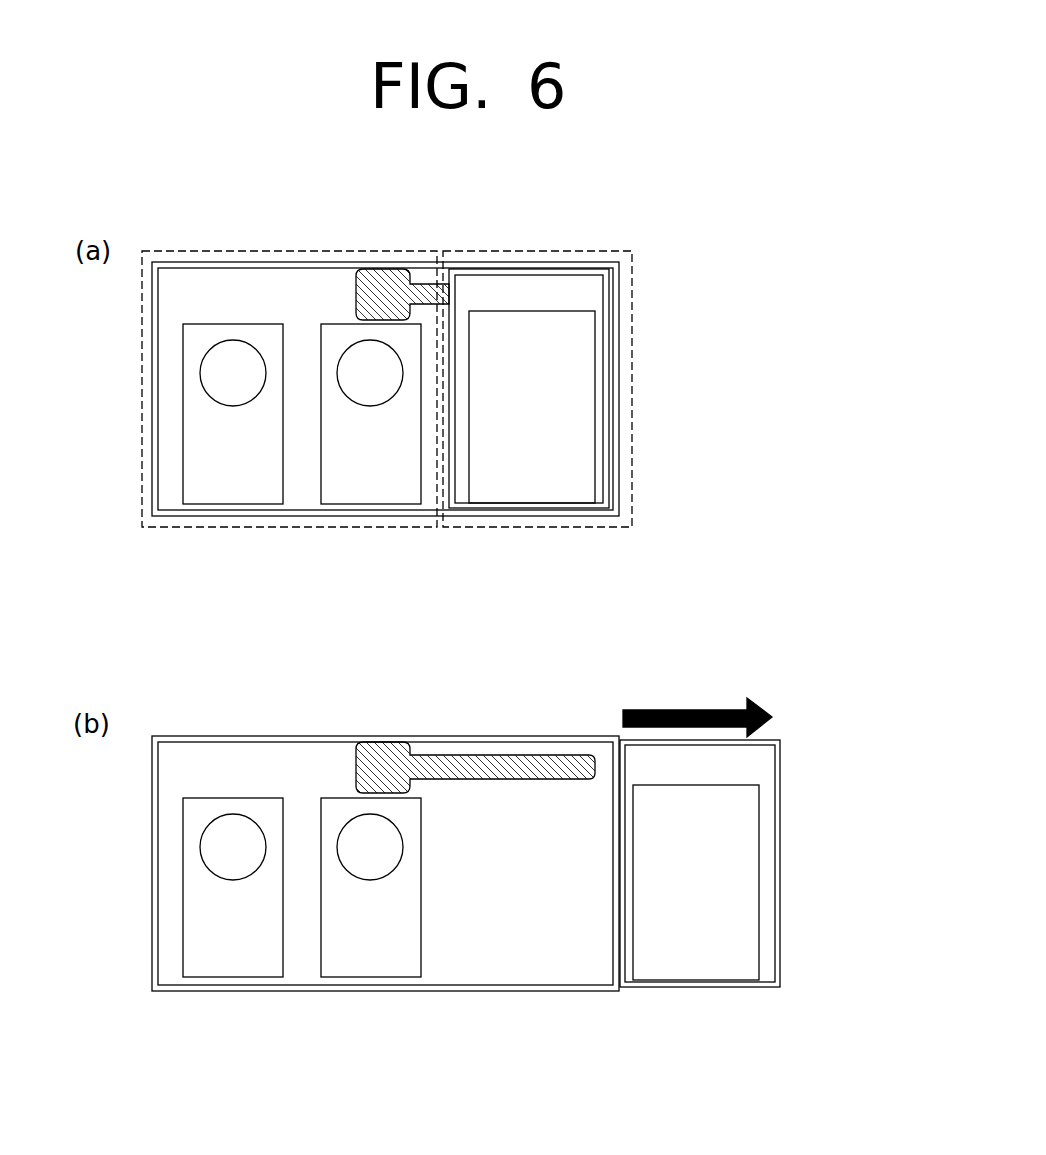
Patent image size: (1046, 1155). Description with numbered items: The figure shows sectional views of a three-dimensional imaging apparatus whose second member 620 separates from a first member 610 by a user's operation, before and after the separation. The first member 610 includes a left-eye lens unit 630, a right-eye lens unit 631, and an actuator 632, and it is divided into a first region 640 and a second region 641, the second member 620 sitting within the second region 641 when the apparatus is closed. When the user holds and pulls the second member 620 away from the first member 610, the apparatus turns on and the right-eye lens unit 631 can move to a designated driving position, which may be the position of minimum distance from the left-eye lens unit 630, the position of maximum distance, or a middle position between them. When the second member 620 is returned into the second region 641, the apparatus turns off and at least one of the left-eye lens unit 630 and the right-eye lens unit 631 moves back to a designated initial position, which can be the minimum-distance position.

The first member 610 is at (297, 262).
The second member 620 is at (588, 292).
The left-eye lens unit 630 is at (232, 480).
The right-eye lens unit 631 is at (367, 480).
The actuator 632 is at (382, 290).
The first region 640 is at (140, 388).
The second region 641 is at (633, 388).